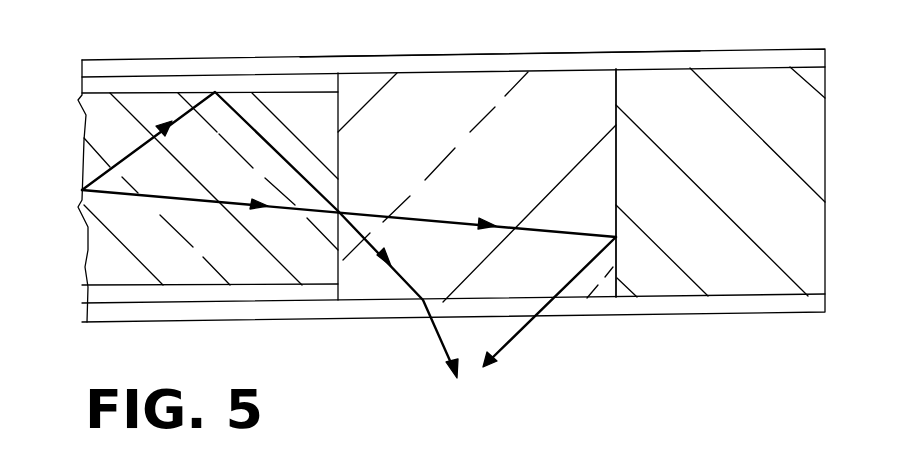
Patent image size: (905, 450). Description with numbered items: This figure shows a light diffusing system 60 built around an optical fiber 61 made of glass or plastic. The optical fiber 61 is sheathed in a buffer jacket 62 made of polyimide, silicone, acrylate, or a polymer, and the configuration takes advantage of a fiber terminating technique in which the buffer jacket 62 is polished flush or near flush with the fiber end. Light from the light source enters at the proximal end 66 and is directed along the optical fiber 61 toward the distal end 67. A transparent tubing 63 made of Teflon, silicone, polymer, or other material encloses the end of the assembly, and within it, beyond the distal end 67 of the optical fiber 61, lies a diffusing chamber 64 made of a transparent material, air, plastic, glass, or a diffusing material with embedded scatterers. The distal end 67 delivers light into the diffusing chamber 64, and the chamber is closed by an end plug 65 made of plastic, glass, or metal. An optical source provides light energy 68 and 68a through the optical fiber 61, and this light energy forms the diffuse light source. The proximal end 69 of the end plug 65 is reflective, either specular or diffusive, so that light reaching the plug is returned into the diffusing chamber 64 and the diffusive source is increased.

The system 60 is at (338, 32).
The optical fiber 61 is at (103, 248).
The buffer jacket 62 is at (82, 88).
The transparent tubing 63 is at (495, 54).
The diffusing chamber 64 is at (548, 157).
The end plug 65 is at (795, 196).
The proximal end 66 is at (82, 152).
The distal end 67 is at (338, 272).
The light energy 68 is at (508, 355).
The light energy 68a is at (440, 347).
The proximal end of the plug 69 is at (616, 105).